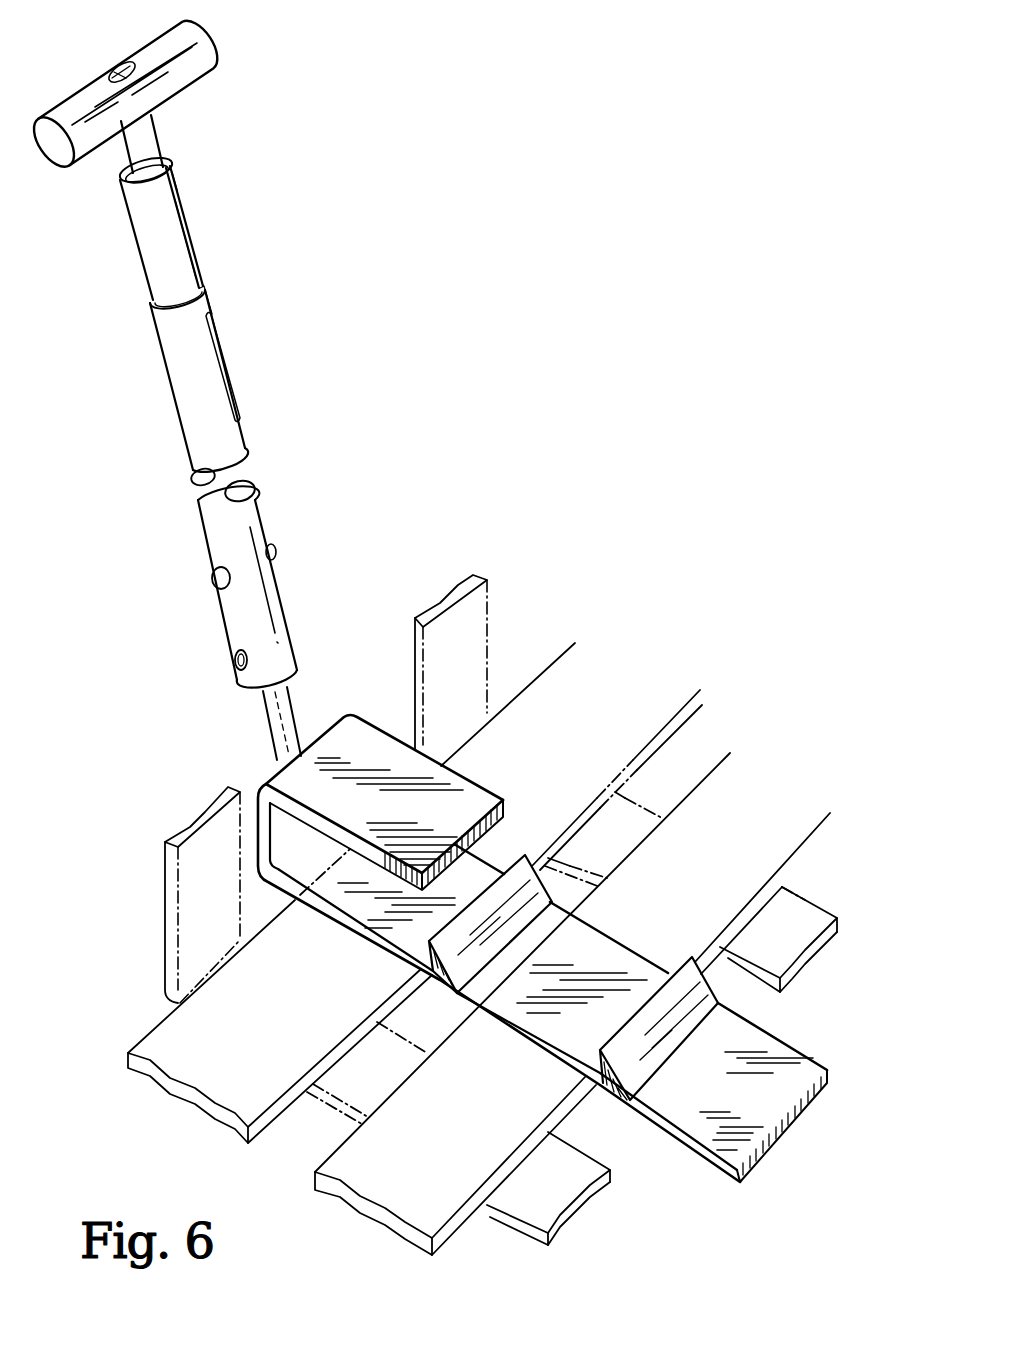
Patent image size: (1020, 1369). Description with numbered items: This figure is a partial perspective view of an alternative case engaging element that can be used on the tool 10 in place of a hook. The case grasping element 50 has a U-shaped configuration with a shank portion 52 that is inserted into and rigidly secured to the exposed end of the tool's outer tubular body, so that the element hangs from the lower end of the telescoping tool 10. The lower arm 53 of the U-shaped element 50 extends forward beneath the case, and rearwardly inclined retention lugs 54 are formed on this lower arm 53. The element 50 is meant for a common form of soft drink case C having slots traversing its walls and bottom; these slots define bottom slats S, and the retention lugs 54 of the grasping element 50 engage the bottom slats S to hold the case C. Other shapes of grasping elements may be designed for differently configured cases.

The tool with T-handle and telescoping shaft 10 is at (292, 397).
The case grasping element 50 is at (496, 929).
The shank portion 52 is at (293, 722).
The lower arm 53 is at (338, 923).
The retention lugs 54 is at (432, 967).
The soft drink case C is at (167, 903).
The bottom slats S is at (347, 1131).